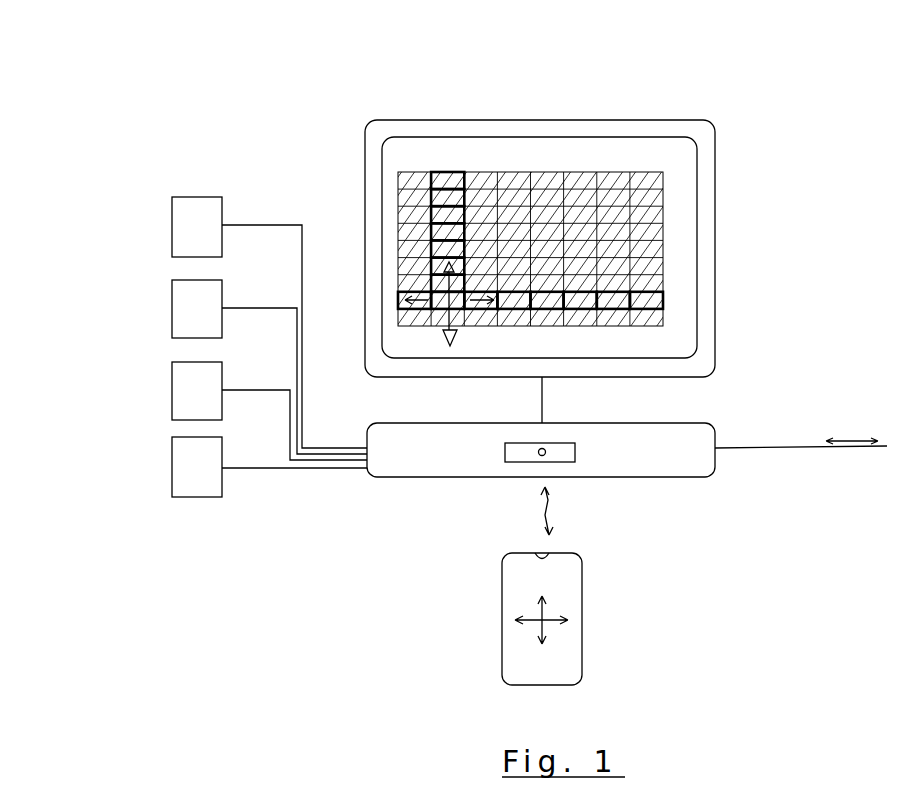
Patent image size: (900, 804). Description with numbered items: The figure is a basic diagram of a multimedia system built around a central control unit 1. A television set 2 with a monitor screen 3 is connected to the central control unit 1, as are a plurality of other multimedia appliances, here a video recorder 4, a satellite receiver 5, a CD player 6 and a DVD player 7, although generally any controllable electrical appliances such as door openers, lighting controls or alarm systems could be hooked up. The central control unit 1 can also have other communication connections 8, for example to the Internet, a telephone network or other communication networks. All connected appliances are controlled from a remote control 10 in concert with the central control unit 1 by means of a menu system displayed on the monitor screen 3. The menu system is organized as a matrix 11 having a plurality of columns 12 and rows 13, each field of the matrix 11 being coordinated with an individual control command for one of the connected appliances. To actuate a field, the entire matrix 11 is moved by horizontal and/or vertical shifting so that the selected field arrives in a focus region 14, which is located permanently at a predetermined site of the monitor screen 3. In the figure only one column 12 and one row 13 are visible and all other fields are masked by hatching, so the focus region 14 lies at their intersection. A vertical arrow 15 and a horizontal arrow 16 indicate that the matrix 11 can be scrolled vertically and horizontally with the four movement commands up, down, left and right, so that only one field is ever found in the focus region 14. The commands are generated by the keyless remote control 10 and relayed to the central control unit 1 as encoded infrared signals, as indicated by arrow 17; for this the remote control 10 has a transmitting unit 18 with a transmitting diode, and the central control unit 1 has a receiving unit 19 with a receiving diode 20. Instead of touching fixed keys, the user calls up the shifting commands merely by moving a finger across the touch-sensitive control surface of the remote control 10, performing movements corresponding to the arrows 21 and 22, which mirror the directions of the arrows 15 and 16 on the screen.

The central control unit 1 is at (697, 478).
The television set 2 is at (715, 218).
The monitor screen 3 is at (697, 160).
The video recorder 4 is at (172, 230).
The satellite receiver 5 is at (172, 312).
The CD player 6 is at (172, 395).
The DVD player 7 is at (172, 470).
The communication connections 8 is at (787, 446).
The remote control 10 is at (582, 615).
The matrix 11 is at (643, 172).
The column 12 is at (441, 172).
The row 13 is at (663, 300).
The focus region 14 is at (436, 312).
The vertical arrow 15 is at (458, 346).
The horizontal arrow 16 is at (294, 346).
The arrow 17 is at (549, 505).
The transmitting unit 18 is at (538, 552).
The receiving unit 19 is at (515, 462).
The receiving diode 20 is at (543, 449).
The arrow 21 is at (541, 605).
The arrow 22 is at (525, 622).